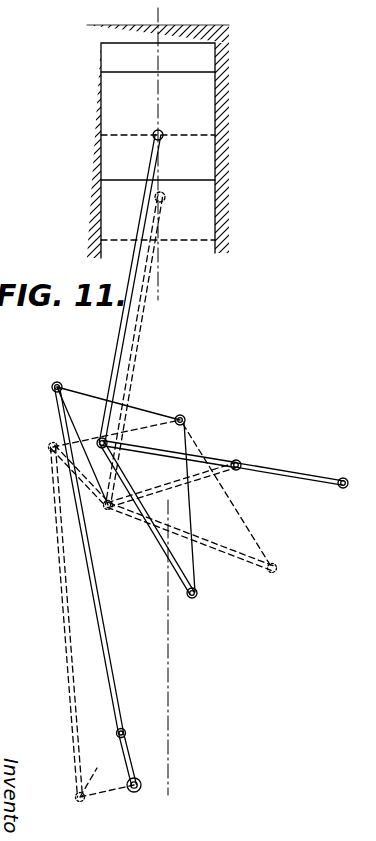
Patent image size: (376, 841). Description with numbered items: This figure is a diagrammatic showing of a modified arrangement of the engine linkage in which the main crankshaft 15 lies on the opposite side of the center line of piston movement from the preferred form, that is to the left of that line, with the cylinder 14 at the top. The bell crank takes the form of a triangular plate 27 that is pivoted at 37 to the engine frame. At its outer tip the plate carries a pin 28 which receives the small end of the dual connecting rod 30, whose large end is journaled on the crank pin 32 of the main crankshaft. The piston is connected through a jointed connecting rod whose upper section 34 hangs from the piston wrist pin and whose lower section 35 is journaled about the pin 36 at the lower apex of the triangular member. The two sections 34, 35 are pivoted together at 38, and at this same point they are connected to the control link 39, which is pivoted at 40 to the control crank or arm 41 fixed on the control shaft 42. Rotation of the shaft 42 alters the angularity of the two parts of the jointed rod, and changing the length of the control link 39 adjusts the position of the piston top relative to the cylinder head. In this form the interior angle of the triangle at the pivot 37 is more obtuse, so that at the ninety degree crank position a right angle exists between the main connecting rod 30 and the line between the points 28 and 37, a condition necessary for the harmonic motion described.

The cylinder with piston 14 is at (192, 170).
The crankshaft 15 is at (141, 781).
The triangular plate 27 is at (142, 405).
The pin 28 is at (52, 385).
The dual connecting rod 30 is at (108, 638).
The crank pin 32 is at (90, 784).
The upper section 34 is at (130, 310).
The lower section 35 is at (137, 472).
The pin 36 is at (197, 590).
The pivot 37 is at (182, 414).
The pivot 38 is at (100, 447).
The control link 39 is at (200, 461).
The pivot 40 is at (239, 470).
The control crank 41 is at (300, 476).
The control shaft 42 is at (343, 490).